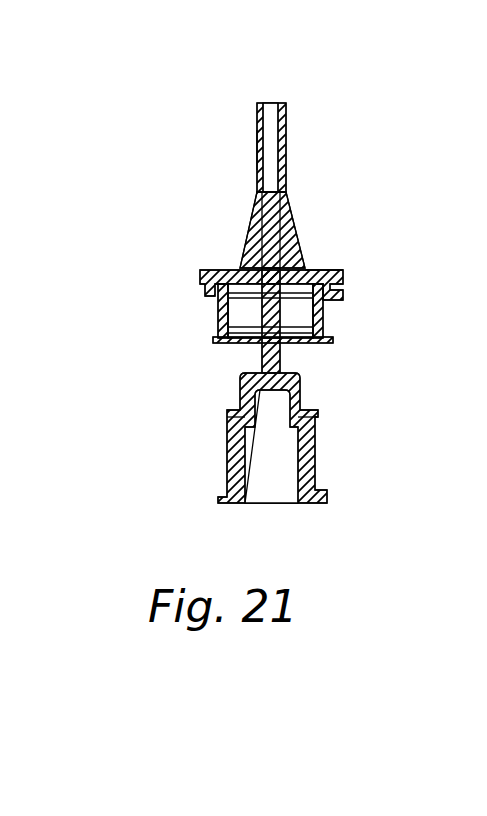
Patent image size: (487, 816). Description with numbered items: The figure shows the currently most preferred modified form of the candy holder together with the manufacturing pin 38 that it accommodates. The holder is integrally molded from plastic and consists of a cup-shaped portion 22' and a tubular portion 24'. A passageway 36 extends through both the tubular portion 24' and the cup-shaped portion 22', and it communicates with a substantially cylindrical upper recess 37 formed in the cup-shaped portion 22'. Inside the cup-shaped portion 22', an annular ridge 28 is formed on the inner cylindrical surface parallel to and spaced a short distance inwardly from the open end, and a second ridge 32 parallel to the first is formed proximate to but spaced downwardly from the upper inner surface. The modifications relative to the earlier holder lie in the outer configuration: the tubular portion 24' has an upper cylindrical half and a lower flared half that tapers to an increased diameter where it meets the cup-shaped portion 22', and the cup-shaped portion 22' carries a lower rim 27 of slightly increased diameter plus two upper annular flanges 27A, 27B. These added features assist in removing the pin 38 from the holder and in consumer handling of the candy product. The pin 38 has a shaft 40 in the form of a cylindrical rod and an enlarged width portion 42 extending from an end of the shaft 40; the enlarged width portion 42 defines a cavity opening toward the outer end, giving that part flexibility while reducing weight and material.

The passageway 36 is at (271, 118).
The tubular portion 24' is at (202, 175).
The shaft 40 is at (292, 222).
The upper recess 37 is at (305, 270).
The upper annular flange 27A is at (200, 275).
The upper annular flange 27B is at (203, 303).
The cup-shaped portion 22' is at (178, 334).
The lower rim 27 is at (267, 325).
The second ridge 32 is at (323, 317).
The annular ridge 28 is at (303, 343).
The pin 38 is at (348, 405).
The enlarged width portion 42 is at (228, 443).